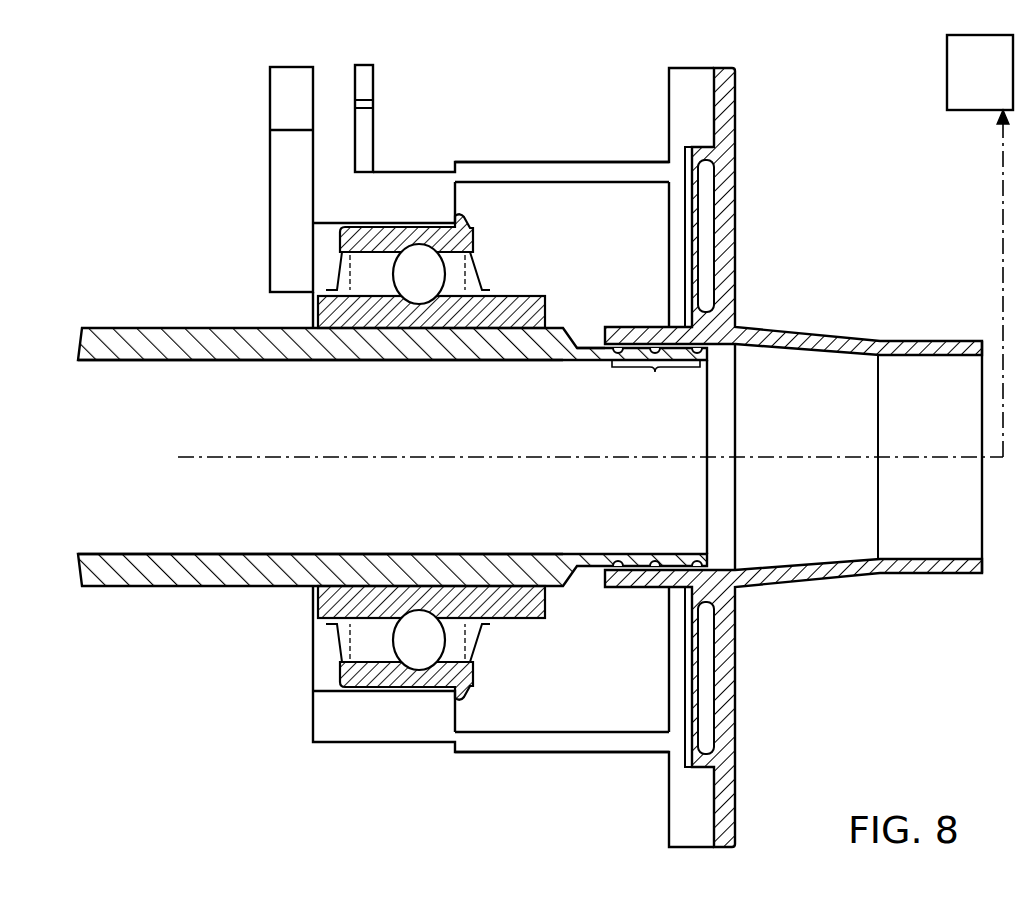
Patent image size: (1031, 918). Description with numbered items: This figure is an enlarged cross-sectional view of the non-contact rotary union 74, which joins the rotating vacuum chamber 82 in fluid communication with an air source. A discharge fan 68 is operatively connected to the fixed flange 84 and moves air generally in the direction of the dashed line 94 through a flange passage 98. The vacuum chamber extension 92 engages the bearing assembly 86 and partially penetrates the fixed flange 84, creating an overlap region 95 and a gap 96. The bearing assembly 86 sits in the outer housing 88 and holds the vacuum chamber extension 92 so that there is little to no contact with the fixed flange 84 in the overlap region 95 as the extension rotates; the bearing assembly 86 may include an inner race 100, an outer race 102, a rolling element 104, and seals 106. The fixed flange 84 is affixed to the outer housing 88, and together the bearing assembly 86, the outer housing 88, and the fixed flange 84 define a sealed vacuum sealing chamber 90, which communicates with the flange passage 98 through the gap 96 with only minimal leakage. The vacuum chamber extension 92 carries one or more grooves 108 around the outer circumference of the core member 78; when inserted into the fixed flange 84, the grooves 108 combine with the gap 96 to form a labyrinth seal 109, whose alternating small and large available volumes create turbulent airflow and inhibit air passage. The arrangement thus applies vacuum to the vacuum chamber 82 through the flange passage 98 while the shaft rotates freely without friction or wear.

The discharge fan 68 is at (968, 81).
The non-contact rotary union 74 is at (793, 457).
The core member 78 is at (193, 335).
The vacuum chamber 82 is at (296, 439).
The fixed flange 84 is at (737, 212).
The bearing assembly 86 is at (426, 469).
The outer housing 88 is at (403, 188).
The vacuum sealing chamber 90 is at (528, 197).
The vacuum chamber extension 92 is at (643, 439).
The dashed line 94 is at (360, 463).
The overlap region 95 is at (655, 374).
The gap 96 is at (716, 352).
The flange passage 98 is at (833, 442).
The inner race 100 is at (316, 606).
The outer race 102 is at (324, 692).
The rolling element 104 is at (420, 660).
The seals 106 is at (333, 654).
The grooves 108 is at (612, 357).
The labyrinth seal 109 is at (590, 334).